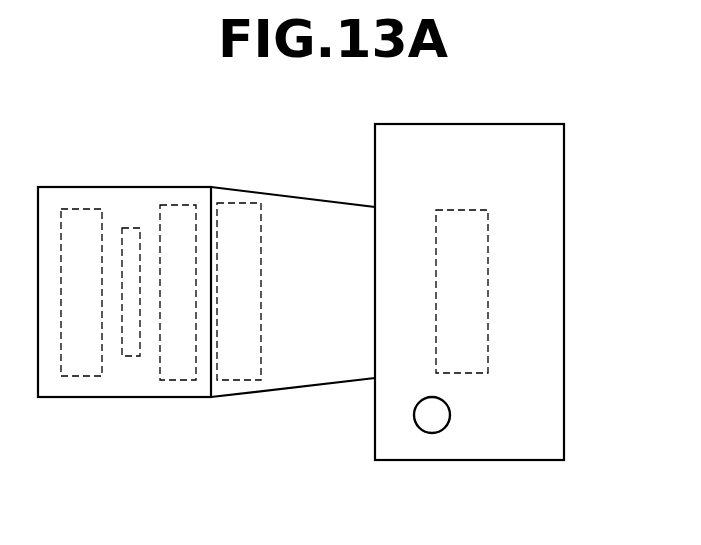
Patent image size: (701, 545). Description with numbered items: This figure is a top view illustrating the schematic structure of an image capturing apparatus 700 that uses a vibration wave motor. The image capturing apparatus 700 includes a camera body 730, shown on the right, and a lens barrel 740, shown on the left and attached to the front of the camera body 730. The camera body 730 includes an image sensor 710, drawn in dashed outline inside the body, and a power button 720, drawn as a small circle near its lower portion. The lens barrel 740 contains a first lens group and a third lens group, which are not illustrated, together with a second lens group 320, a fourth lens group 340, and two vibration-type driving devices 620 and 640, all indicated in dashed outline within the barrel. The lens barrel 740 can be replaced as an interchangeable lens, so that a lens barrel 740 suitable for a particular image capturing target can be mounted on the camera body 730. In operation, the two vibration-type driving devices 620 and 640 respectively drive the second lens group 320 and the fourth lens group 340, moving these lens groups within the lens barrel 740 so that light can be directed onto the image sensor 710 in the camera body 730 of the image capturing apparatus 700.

The image capturing apparatus 700 is at (352, 104).
The lens barrel 740 is at (105, 184).
The camera body 730 is at (509, 450).
The second lens group 320 is at (78, 377).
The fourth lens group 340 is at (128, 358).
The vibration-type driving device 620 is at (172, 210).
The vibration-type driving device 640 is at (238, 212).
The image sensor 710 is at (480, 296).
The power button 720 is at (433, 424).